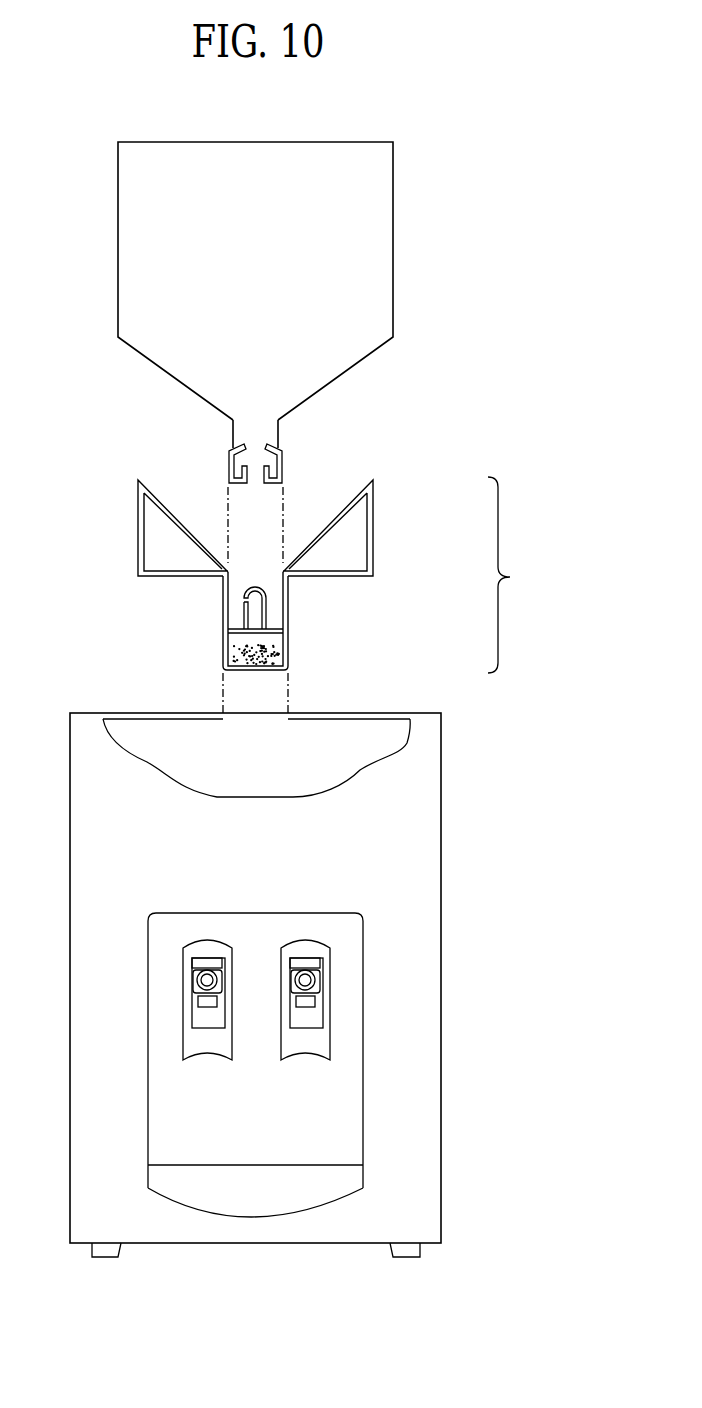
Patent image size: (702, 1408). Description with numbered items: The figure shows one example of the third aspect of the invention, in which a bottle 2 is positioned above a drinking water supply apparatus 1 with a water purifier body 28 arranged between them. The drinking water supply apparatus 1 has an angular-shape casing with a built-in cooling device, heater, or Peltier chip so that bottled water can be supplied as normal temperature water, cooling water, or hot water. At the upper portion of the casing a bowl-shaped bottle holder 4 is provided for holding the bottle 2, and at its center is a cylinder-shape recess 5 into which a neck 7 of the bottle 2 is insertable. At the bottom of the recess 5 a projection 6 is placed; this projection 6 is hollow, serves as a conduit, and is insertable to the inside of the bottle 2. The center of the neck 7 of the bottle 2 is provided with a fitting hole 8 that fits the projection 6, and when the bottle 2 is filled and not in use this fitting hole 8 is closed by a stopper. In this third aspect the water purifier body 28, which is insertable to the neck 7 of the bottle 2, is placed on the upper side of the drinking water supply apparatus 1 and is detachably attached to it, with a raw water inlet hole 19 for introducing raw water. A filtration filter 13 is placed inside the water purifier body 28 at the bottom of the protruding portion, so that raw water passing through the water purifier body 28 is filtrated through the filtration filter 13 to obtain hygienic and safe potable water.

The drinking water supply apparatus 1 is at (423, 1028).
The bottle 2 is at (387, 181).
The bottle holder 4 is at (372, 509).
The recess 5 is at (230, 614).
The projection 6 is at (254, 585).
The neck 7 is at (229, 462).
The fitting hole 8 is at (253, 480).
The filtration filter 13 is at (283, 660).
The raw water inlet hole 19 is at (246, 600).
The water purifier body 28 is at (519, 575).